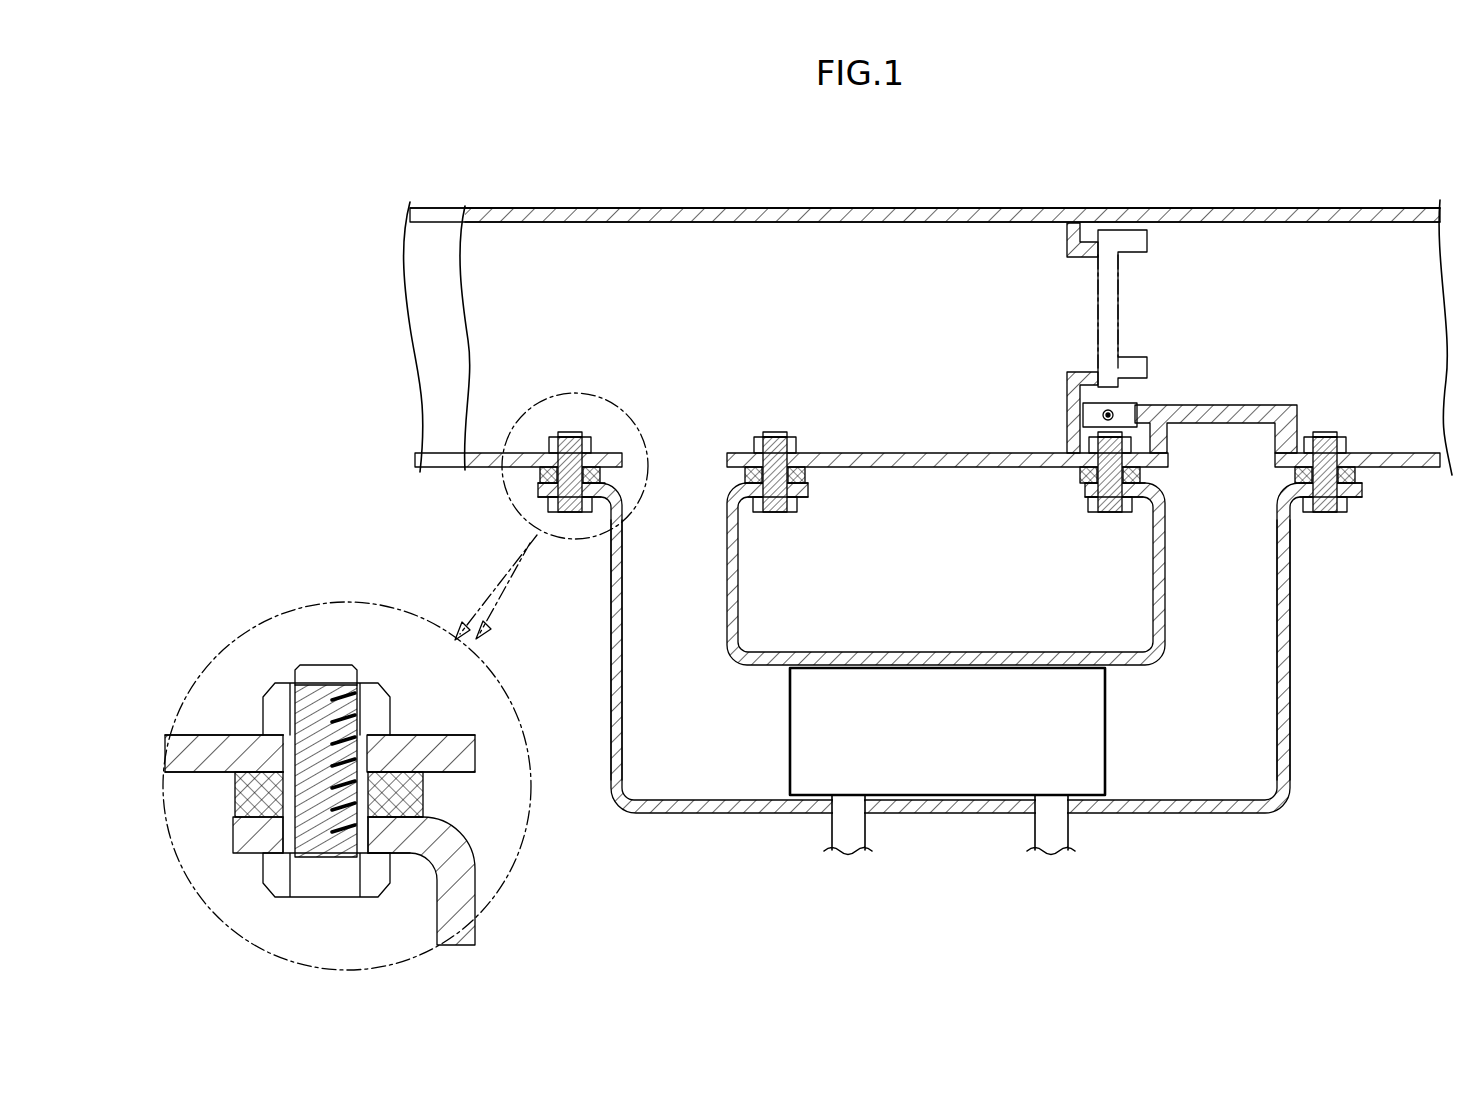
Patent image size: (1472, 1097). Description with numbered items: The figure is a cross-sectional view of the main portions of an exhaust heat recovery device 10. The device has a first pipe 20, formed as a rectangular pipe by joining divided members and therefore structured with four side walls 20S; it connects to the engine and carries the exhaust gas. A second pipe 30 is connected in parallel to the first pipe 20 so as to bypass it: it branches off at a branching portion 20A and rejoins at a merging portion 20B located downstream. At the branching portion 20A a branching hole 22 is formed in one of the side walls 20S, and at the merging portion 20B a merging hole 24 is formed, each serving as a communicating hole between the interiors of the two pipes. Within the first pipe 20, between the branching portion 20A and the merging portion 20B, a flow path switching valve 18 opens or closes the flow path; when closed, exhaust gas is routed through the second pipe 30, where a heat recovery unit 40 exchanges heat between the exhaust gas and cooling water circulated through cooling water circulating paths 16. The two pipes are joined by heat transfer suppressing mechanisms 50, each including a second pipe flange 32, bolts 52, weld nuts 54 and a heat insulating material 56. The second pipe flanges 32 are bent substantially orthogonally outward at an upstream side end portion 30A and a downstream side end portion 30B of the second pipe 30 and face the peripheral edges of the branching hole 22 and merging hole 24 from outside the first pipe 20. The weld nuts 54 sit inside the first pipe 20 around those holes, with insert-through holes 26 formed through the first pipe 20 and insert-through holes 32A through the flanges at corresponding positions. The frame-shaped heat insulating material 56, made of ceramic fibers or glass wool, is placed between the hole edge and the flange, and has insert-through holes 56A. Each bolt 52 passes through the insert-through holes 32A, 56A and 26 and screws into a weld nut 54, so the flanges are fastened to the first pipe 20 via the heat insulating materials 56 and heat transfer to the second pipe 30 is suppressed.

The exhaust heat recovery device 10 is at (1268, 166).
The cooling water circulating paths 16 is at (868, 834).
The flow path switching valve 18 is at (1098, 325).
The first pipe 20 is at (995, 205).
The branching portion 20A is at (637, 290).
The merging portion 20B is at (1195, 290).
The side walls 20S is at (435, 345).
The branching hole 22 is at (730, 453).
The merging hole 24 is at (1264, 450).
The insert-through holes 26 is at (350, 737).
The second pipe 30 is at (693, 815).
The upstream side end portion 30A is at (628, 504).
The downstream side end portion 30B is at (1278, 512).
The second pipe flange 32 is at (540, 497).
The insert-through holes 32A is at (363, 855).
The heat recovery unit 40 is at (1100, 736).
The heat transfer suppressing mechanism 50 is at (527, 486).
The bolts 52 is at (570, 512).
The weld nuts 54 is at (575, 435).
The heat insulating material 56 is at (550, 470).
The insert-through holes 56A is at (425, 797).